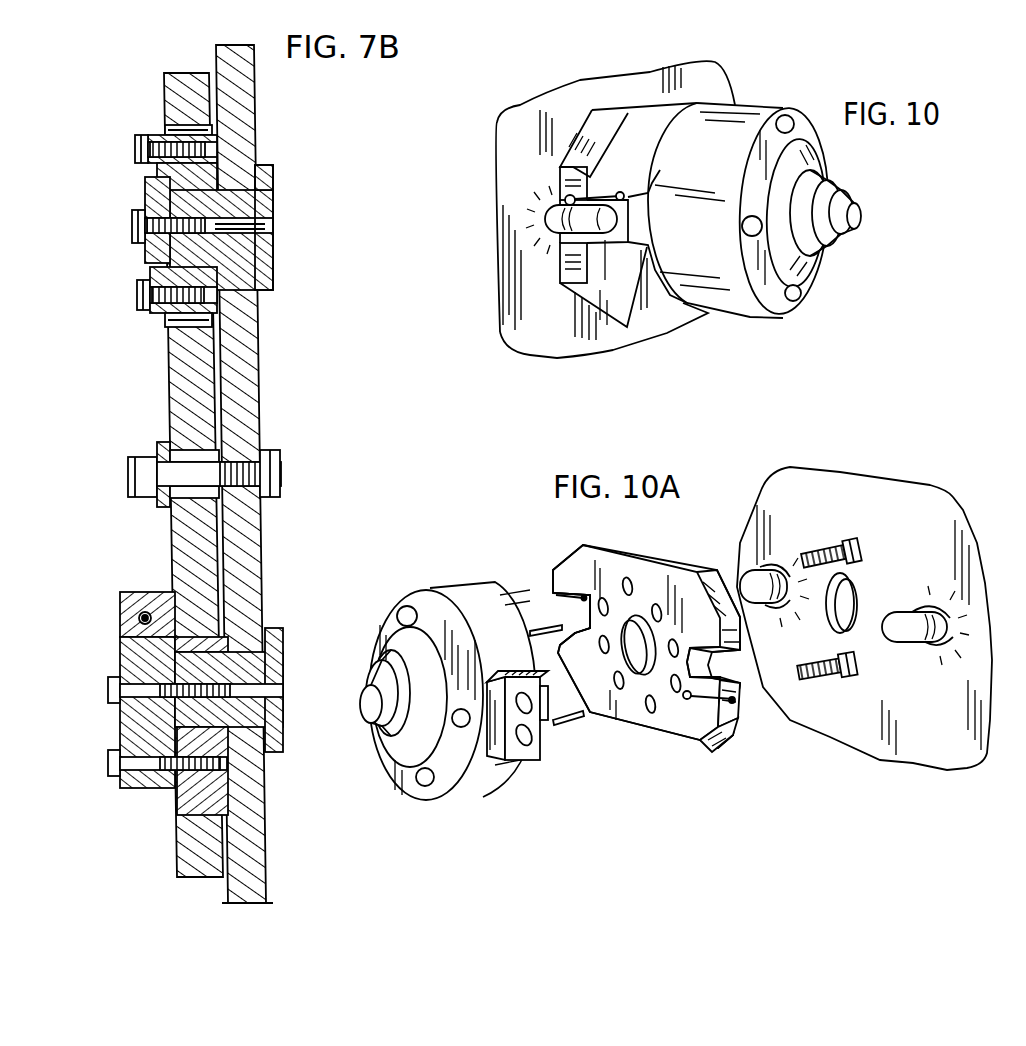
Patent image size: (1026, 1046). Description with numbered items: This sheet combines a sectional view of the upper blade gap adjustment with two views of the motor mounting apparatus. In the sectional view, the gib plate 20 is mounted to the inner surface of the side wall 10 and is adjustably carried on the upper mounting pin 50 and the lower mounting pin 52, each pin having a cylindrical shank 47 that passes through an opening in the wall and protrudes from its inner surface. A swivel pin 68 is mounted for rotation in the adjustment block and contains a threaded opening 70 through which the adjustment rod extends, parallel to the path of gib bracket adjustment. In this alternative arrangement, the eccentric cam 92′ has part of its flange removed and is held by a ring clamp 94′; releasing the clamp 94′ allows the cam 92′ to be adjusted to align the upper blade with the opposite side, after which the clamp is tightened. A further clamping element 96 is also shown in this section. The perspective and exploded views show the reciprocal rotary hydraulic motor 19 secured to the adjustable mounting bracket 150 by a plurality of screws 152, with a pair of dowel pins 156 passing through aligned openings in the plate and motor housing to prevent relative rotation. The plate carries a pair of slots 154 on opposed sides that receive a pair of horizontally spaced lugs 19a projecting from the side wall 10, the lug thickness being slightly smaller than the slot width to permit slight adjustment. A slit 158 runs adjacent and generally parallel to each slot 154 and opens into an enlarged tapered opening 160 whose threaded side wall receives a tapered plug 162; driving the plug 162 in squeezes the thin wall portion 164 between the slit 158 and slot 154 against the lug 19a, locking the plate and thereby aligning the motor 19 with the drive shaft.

In FIG. 7B, the side wall 10 is at (262, 393).
In FIG. 10A, the side wall 10 is at (936, 566).
In FIG. 10, the reciprocal rotary hydraulic motor 19 is at (762, 107).
In FIG. 10A, the reciprocal rotary hydraulic motor 19 is at (455, 585).
In FIG. 10, the lug 19a is at (593, 252).
In FIG. 10A, the lug 19a is at (763, 573).
In FIG. 7B, the gib plate 20 is at (170, 394).
In FIG. 7B, the cylindrical shank 47 is at (218, 205).
In FIG. 7B, the upper mounting pin 50 is at (277, 255).
In FIG. 7B, the lower mounting pin 52 is at (279, 667).
In FIG. 7B, the swivel pin 68 is at (120, 604).
In FIG. 7B, the threaded opening 70 is at (138, 618).
In FIG. 7B, the eccentric cam 92′ is at (216, 174).
In FIG. 7B, the ring clamp 94′ is at (147, 134).
In FIG. 7B, the lower clamp bracket 96 is at (140, 296).
In FIG. 10, the adjustable mounting bracket 150 is at (643, 120).
In FIG. 10A, the screw 152 is at (862, 540).
In FIG. 10A, the slot 154 is at (558, 653).
In FIG. 10A, the dowel pin 156 is at (545, 627).
In FIG. 10, the slit 158 is at (561, 166).
In FIG. 10A, the slit 158 is at (707, 738).
In FIG. 10A, the tapered opening 160 is at (733, 705).
In FIG. 10A, the tapered plug 162 is at (728, 720).
In FIG. 10A, the thin wall portion 164 is at (703, 690).